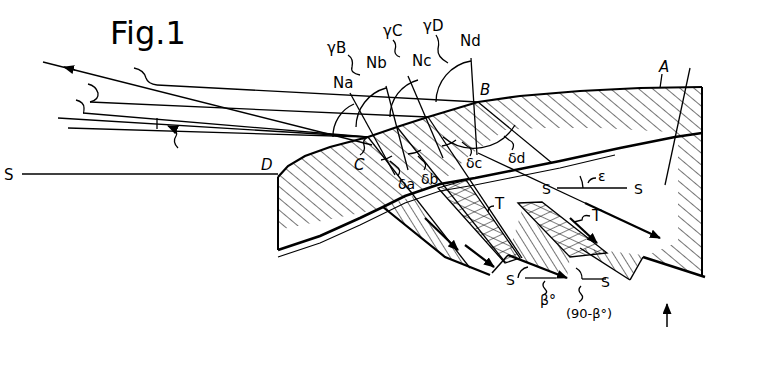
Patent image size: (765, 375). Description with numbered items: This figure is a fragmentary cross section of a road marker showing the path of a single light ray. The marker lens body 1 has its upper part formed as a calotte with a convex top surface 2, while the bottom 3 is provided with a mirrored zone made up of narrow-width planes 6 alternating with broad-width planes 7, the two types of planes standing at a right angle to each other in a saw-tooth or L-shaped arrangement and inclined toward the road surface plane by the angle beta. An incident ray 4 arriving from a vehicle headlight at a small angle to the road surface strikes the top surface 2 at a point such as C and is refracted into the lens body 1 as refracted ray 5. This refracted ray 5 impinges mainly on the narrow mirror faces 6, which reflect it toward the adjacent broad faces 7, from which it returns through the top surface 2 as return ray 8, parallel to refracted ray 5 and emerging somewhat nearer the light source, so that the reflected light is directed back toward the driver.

The marker lens body 1 is at (684, 120).
The convex top surface 2 is at (553, 89).
The bottom 3 is at (667, 325).
The incident ray 4 is at (242, 110).
The refracted ray 5 is at (548, 162).
The narrow-width planes 6 is at (501, 275).
The broad-width planes 7 is at (455, 268).
The return ray 8 is at (207, 96).